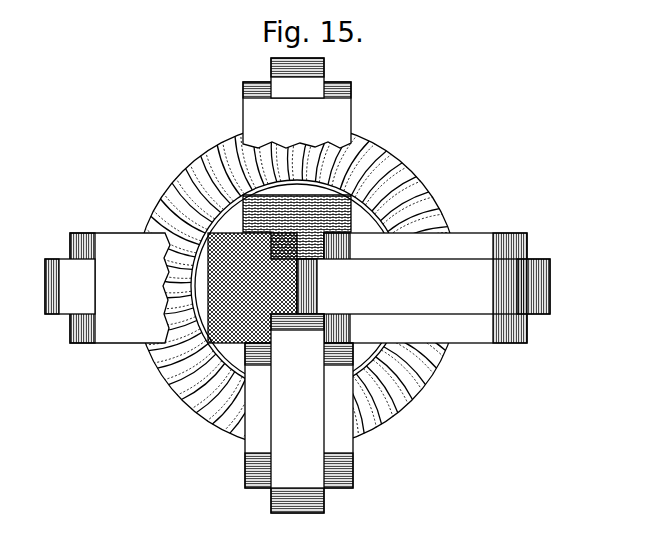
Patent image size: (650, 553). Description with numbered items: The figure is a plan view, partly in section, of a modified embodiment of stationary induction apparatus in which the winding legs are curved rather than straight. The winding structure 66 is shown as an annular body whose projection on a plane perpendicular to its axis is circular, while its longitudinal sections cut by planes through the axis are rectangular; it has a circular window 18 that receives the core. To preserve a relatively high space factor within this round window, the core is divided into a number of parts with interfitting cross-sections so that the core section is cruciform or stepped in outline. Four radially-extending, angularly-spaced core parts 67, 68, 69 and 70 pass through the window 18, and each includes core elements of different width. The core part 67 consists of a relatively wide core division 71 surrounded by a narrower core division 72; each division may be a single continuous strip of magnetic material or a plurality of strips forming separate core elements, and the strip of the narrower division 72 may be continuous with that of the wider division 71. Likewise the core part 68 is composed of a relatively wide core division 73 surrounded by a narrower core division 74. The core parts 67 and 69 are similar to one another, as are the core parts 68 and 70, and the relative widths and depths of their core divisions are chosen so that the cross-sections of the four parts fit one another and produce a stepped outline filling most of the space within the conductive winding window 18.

The circular window 18 is at (368, 222).
The winding structure 66 is at (417, 188).
The core part 67 is at (350, 107).
The core part 68 is at (552, 283).
The core part 69 is at (328, 503).
The core part 70 is at (58, 315).
The core division 71 is at (350, 90).
The core division 72 is at (323, 67).
The core division 73 is at (513, 232).
The core division 74 is at (537, 258).